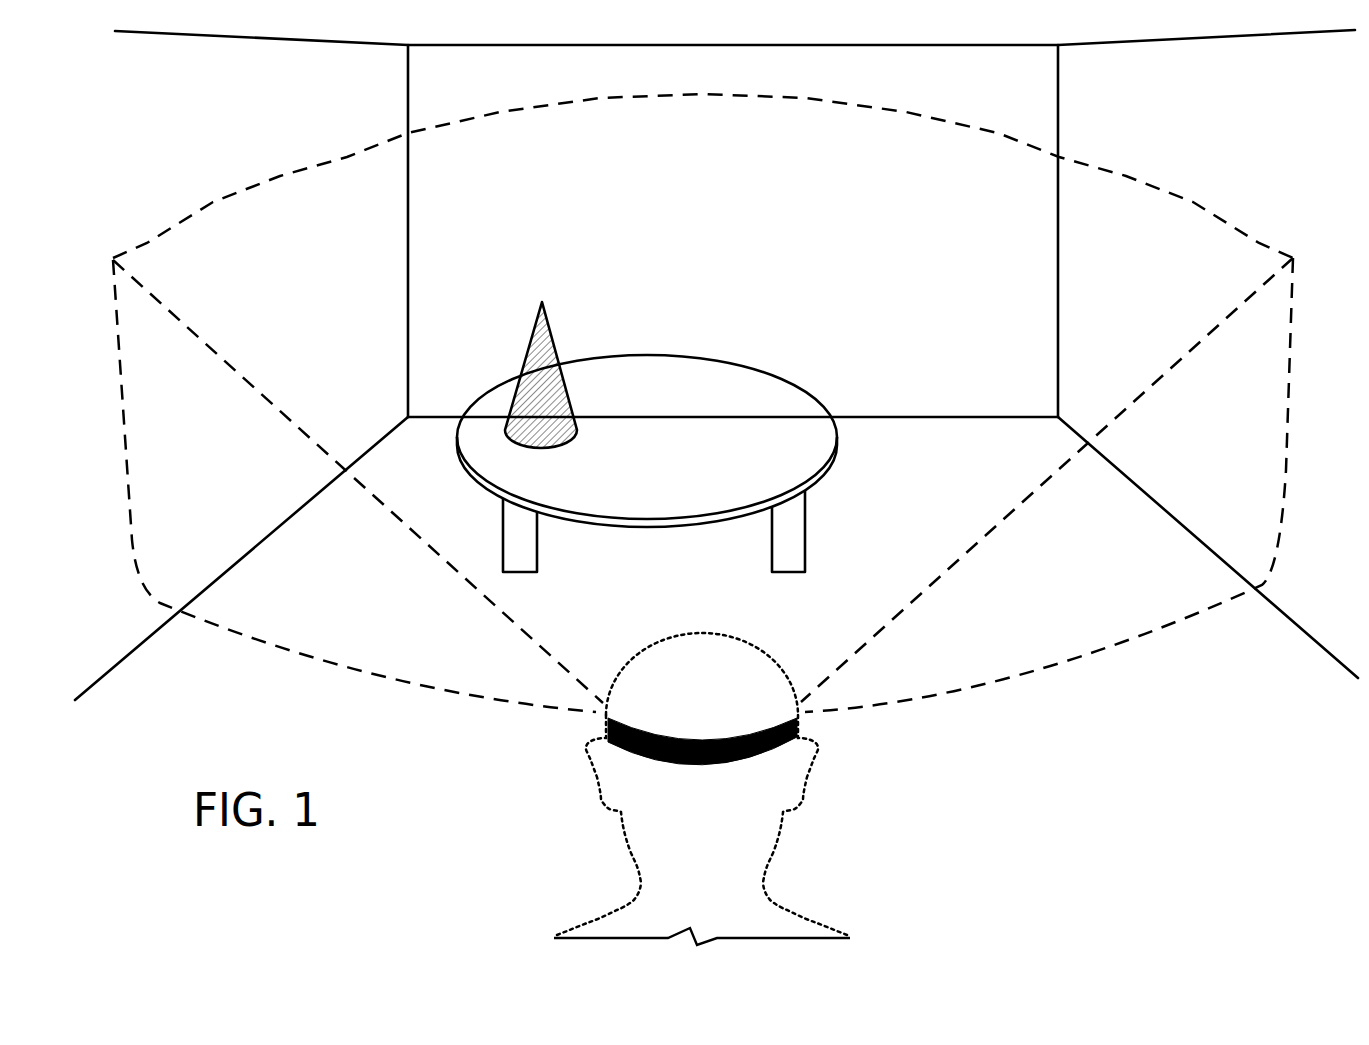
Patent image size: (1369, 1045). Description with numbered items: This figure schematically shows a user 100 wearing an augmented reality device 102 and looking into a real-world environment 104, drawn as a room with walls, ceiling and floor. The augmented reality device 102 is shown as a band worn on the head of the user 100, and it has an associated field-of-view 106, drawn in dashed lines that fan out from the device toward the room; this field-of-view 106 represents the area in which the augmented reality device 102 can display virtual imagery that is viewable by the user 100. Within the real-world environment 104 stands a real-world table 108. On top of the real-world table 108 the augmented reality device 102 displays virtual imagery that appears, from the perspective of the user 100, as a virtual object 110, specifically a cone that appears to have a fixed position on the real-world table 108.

The user 100 is at (714, 666).
The augmented reality device 102 is at (806, 766).
The real-world environment 104 is at (237, 104).
The field-of-view 106 is at (203, 210).
The real-world table 108 is at (797, 387).
The virtual object 110 is at (552, 336).